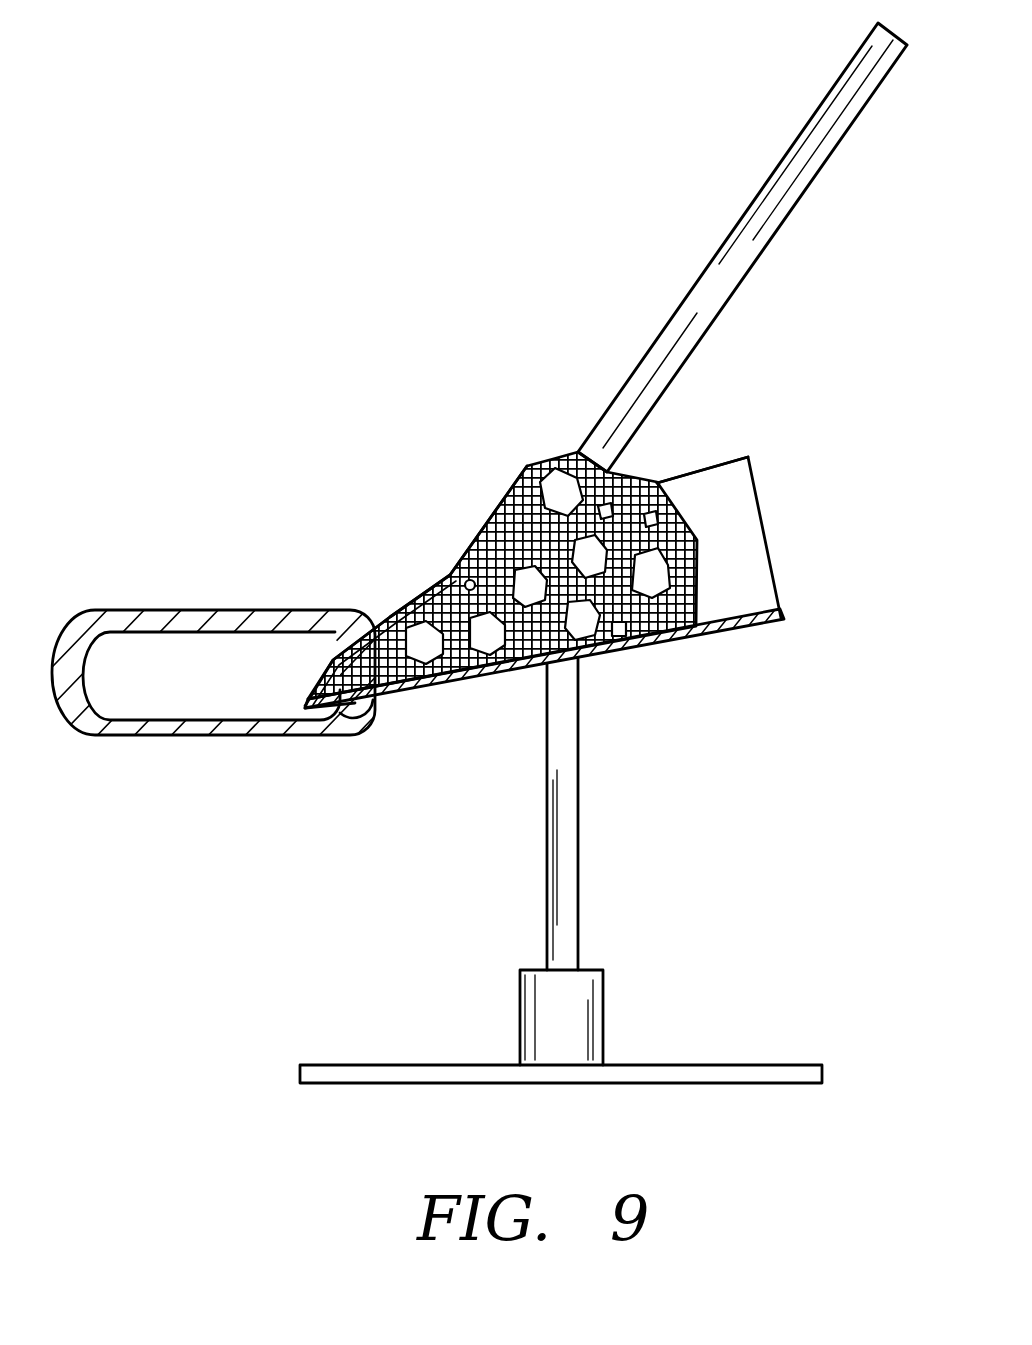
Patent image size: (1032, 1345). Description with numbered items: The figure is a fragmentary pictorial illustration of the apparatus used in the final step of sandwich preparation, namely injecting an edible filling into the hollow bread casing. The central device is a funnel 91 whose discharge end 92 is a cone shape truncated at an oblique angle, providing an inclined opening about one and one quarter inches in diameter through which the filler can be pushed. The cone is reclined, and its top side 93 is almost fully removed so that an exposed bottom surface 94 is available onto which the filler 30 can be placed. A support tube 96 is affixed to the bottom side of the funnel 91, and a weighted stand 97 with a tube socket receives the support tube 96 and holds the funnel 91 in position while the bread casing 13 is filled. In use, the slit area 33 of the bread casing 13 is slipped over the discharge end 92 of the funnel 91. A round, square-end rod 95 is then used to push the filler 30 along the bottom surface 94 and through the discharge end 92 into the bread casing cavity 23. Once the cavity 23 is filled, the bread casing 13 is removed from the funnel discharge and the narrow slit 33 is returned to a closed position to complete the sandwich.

The bread casing 13 is at (88, 650).
The bread casing cavity 23 is at (240, 675).
The filler 30 is at (487, 520).
The slit area 33 is at (362, 705).
The funnel 91 is at (733, 627).
The discharge end 92 is at (323, 667).
The top side 93 is at (720, 466).
The bottom surface 94 is at (730, 610).
The rod 95 is at (725, 267).
The support tube 96 is at (578, 787).
The weighted stand 97 is at (452, 1065).